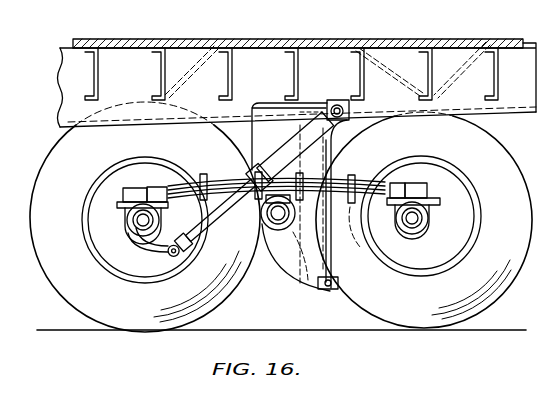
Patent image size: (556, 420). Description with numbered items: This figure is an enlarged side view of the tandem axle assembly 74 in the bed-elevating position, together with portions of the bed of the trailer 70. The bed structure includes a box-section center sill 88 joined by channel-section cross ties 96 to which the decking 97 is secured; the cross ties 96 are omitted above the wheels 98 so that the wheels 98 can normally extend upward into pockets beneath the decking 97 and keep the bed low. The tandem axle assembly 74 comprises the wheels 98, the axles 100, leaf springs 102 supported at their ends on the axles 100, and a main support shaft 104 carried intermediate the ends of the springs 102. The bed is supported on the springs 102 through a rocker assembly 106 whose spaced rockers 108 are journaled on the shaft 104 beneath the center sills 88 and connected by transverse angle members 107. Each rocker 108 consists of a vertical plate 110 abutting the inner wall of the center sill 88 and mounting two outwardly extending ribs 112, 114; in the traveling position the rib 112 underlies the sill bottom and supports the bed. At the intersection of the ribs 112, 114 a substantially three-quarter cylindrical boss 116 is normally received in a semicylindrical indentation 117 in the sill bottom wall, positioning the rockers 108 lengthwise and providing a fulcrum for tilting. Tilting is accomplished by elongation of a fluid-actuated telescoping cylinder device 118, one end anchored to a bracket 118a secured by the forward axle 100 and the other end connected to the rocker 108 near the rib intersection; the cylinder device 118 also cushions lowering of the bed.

The trailer 70 is at (234, 35).
The decking 97 is at (398, 37).
The center sills 88 is at (72, 87).
The cross ties 96 is at (158, 80).
The wheels 98 is at (67, 293).
The axles 100 is at (128, 228).
The leaf springs 102 is at (378, 184).
The main support shaft 104 is at (280, 231).
The rocker assembly 106 is at (318, 291).
The transverse angle members 107 is at (335, 102).
The rockers 108 is at (305, 274).
The vertical plate 110 is at (277, 140).
The rib 112 is at (359, 232).
The rib 114 is at (280, 111).
The cylindrical boss 116 is at (322, 100).
The semicylindrical indentation 117 is at (308, 100).
The fluid-actuated telescoping cylinder device 118 is at (245, 268).
The bracket 118a is at (157, 256).
The tandem axle assembly 74 is at (333, 152).